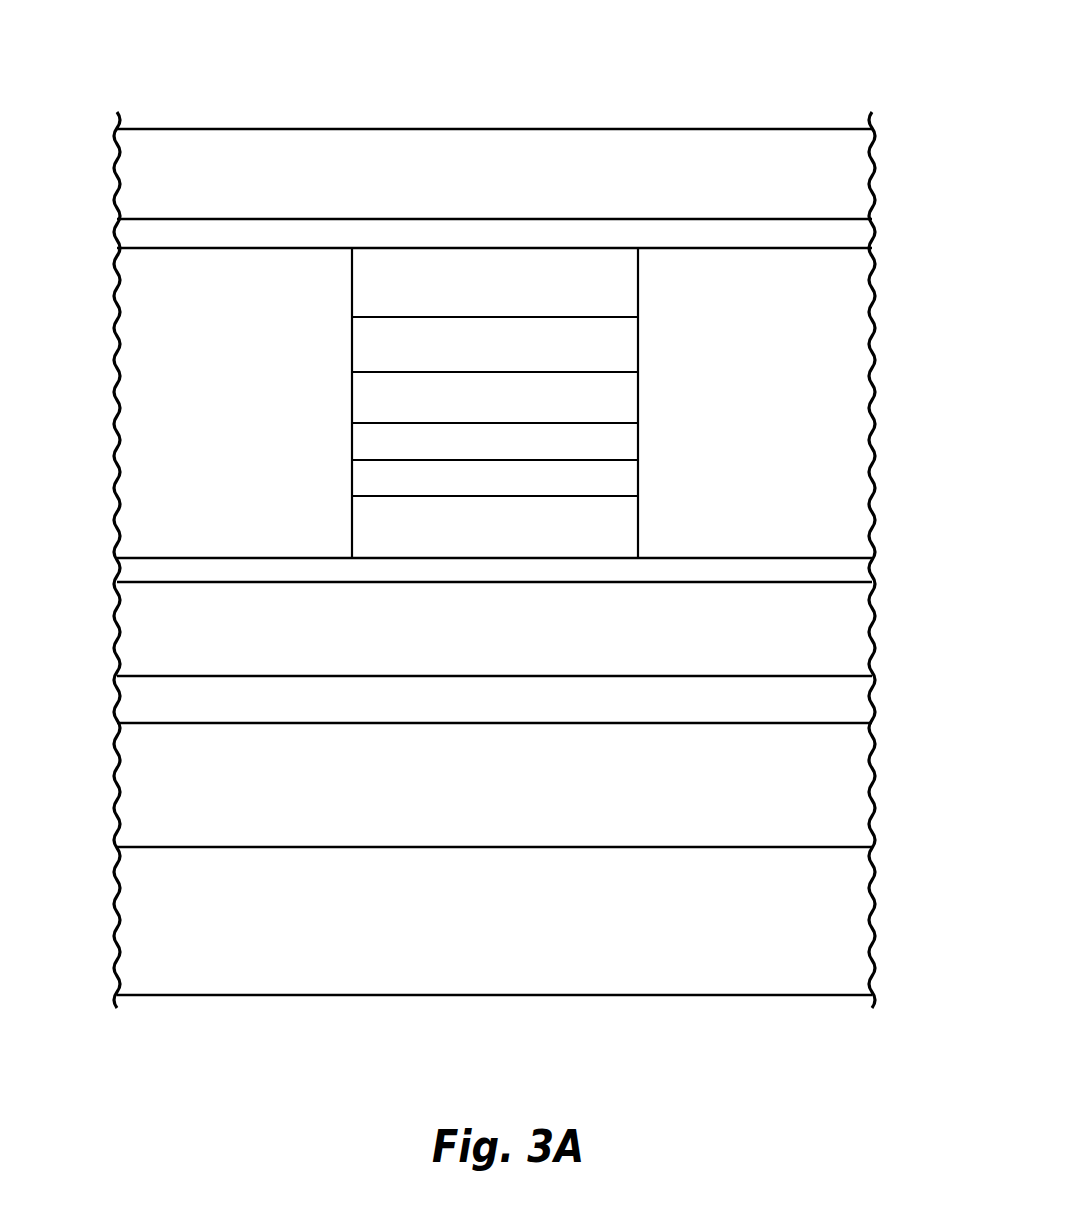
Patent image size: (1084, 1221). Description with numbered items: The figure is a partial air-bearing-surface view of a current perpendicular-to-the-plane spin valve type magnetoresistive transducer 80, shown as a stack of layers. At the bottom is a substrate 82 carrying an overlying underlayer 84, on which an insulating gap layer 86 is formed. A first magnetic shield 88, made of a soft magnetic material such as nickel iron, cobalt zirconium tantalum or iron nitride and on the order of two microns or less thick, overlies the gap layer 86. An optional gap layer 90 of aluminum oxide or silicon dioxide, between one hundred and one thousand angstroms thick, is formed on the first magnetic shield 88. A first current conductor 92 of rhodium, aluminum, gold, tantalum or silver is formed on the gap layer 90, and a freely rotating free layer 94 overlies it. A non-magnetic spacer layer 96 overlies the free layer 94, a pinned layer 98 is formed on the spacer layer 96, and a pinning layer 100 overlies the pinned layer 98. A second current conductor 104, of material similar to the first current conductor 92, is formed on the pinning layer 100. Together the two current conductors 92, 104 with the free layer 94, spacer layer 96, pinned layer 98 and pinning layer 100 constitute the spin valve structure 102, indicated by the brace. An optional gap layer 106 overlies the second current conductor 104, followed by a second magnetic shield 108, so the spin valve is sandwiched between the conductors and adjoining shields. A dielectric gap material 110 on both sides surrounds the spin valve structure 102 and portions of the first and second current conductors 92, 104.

The transducer 80 is at (259, 1052).
The substrate 82 is at (858, 872).
The underlayer 84 is at (858, 800).
The insulating gap layer 86 is at (862, 707).
The first magnetic shield 88 is at (858, 647).
The gap layer 90 is at (858, 572).
The first current conductor 92 is at (628, 521).
The free layer 94 is at (625, 478).
The spacer layer 96 is at (620, 443).
The pinned layer 98 is at (628, 395).
The pinning layer 100 is at (628, 340).
The spin valve structure 102 is at (347, 318).
The second current conductor 104 is at (628, 289).
The gap layer 106 is at (862, 238).
The second magnetic shield 108 is at (682, 140).
The dielectric gap material 110 is at (153, 391).